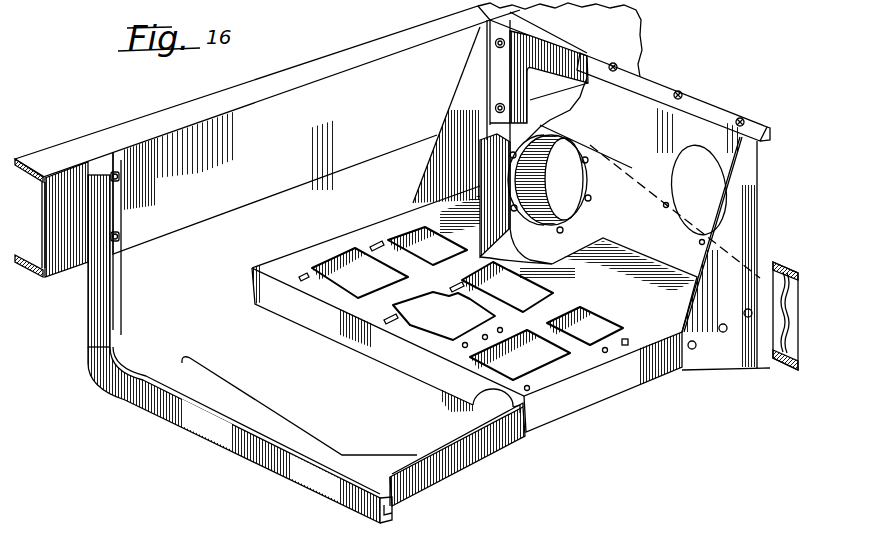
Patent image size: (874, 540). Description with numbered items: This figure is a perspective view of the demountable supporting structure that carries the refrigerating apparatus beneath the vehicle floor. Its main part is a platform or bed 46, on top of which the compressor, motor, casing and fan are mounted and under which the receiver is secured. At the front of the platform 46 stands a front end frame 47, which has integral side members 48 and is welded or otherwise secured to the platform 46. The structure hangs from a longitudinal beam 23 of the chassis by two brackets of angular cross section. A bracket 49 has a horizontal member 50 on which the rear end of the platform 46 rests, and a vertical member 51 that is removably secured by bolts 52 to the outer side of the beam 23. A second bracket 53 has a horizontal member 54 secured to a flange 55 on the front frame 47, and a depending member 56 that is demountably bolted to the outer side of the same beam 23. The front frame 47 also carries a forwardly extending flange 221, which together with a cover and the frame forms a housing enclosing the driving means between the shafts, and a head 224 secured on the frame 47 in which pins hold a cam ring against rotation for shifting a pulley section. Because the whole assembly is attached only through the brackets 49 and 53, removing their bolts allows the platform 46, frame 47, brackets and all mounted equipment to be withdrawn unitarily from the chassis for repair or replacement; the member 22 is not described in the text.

The side rail beam 22 is at (68, 140).
The longitudinal beam 23 is at (275, 181).
The platform 46 is at (577, 365).
The front end frame 47 is at (650, 228).
The side members 48 is at (450, 111).
The bracket 49 is at (212, 423).
The horizontal member 50 is at (437, 473).
The vertical member 51 is at (100, 268).
The bolts 52 is at (117, 173).
The bracket 53 is at (600, 46).
The horizontal member 54 is at (553, 58).
The flange 55 is at (670, 82).
The depending member 56 is at (503, 71).
The forwardly extending flange 221 is at (553, 203).
The head 224 is at (690, 228).